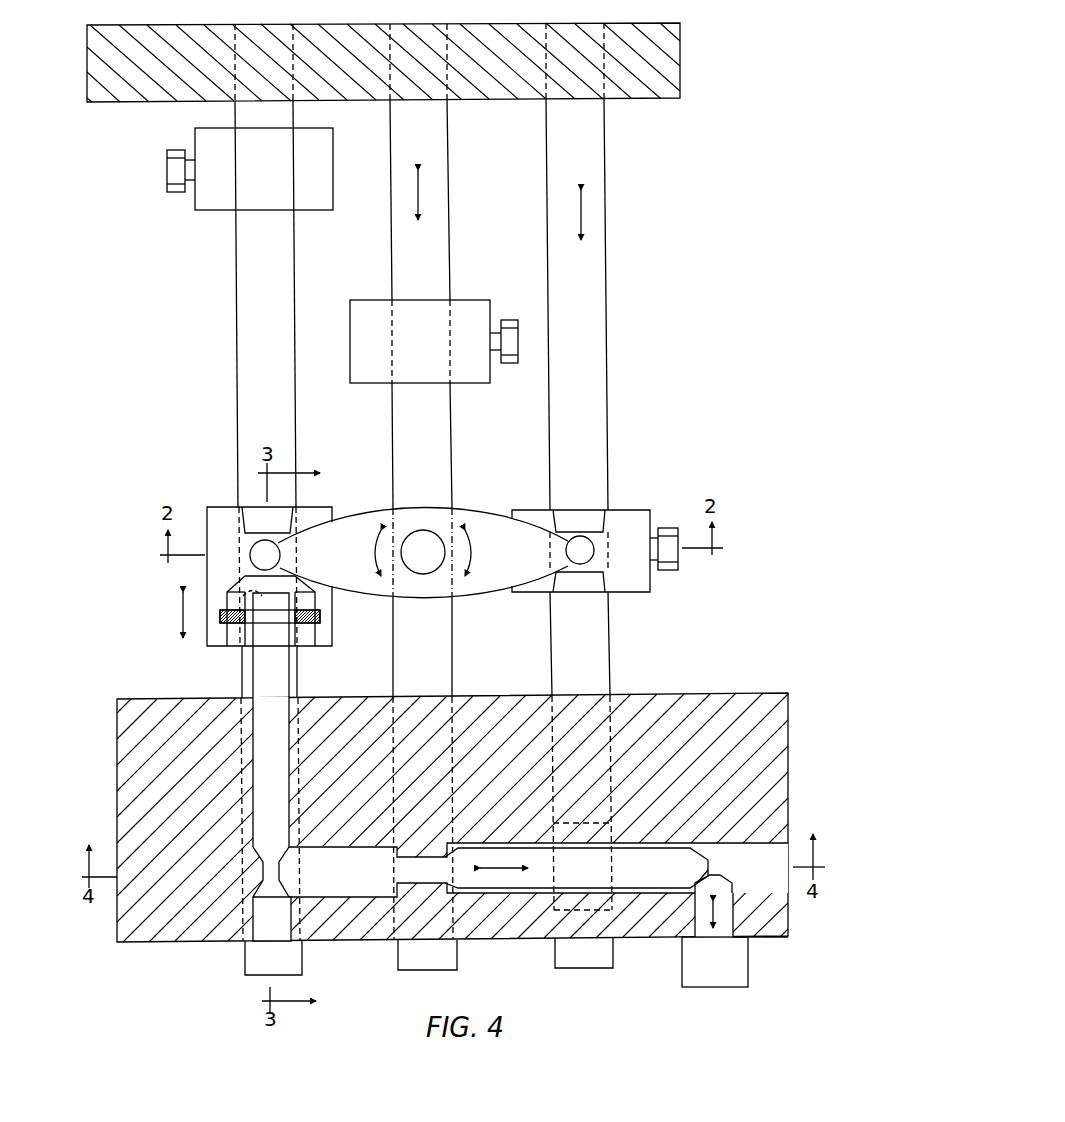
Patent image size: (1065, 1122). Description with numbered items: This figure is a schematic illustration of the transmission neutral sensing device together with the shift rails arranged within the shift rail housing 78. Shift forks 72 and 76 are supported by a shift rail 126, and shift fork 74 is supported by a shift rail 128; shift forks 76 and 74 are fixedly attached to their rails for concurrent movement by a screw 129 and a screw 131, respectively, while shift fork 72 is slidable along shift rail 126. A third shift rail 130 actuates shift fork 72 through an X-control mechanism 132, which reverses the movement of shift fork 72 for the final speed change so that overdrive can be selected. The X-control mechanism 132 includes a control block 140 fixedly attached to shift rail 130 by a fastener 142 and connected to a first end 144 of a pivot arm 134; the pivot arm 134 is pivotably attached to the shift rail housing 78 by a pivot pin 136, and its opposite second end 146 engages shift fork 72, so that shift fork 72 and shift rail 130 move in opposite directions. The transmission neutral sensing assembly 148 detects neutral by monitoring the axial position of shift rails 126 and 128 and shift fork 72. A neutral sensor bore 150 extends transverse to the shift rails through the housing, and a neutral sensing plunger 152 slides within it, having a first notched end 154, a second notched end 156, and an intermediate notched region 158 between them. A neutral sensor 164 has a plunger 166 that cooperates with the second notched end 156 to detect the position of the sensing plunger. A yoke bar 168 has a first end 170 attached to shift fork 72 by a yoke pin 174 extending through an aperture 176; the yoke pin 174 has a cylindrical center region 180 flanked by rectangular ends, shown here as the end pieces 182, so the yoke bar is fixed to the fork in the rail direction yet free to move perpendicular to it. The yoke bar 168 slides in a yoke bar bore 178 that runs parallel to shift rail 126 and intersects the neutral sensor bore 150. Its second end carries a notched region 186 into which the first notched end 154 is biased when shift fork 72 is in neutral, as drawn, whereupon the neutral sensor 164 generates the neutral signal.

The shift rail housing 78 is at (683, 44).
The screw 129 is at (166, 172).
The shift fork 76 is at (199, 206).
The shift rail 126 is at (236, 289).
The shift rail 128 is at (450, 231).
The third shift rail 130 is at (607, 213).
The shift fork 74 is at (368, 300).
The screw 131 is at (509, 364).
The X-control mechanism 132 is at (642, 418).
The shift fork 72 is at (213, 507).
The pivot arm 134 is at (370, 518).
The pivot pin 136 is at (428, 530).
The control block 140 is at (636, 510).
The fastener 142 is at (670, 571).
The first end of pivot arm 144 is at (596, 552).
The second end of pivot arm 146 is at (251, 557).
The first end of yoke bar 170 is at (300, 598).
The cylindrical center region 180 is at (237, 588).
The washer 182 is at (222, 618).
The aperture 176 is at (241, 661).
The yoke bar 168 is at (251, 673).
The yoke pin 174 is at (320, 618).
The transmission neutral sensing assembly 148 is at (88, 732).
The yoke bar bore 178 is at (262, 716).
The notched region 186 is at (262, 873).
The first notched end 154 is at (285, 895).
The intermediate notched region 158 is at (398, 939).
The neutral sensing plunger 152 is at (520, 897).
The second notched end 156 is at (713, 840).
The plunger 166 is at (732, 882).
The neutral sensor bore 150 is at (772, 892).
The neutral sensor 164 is at (715, 988).